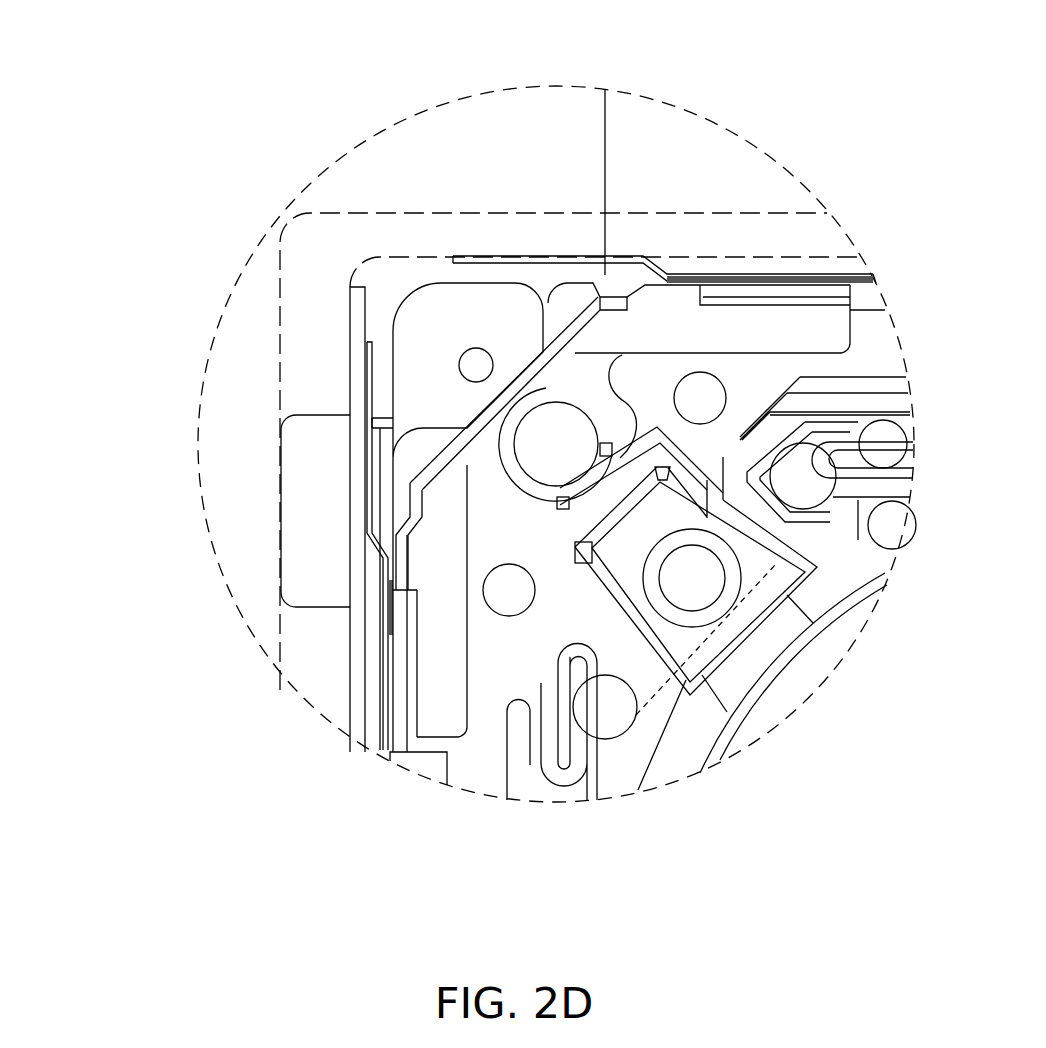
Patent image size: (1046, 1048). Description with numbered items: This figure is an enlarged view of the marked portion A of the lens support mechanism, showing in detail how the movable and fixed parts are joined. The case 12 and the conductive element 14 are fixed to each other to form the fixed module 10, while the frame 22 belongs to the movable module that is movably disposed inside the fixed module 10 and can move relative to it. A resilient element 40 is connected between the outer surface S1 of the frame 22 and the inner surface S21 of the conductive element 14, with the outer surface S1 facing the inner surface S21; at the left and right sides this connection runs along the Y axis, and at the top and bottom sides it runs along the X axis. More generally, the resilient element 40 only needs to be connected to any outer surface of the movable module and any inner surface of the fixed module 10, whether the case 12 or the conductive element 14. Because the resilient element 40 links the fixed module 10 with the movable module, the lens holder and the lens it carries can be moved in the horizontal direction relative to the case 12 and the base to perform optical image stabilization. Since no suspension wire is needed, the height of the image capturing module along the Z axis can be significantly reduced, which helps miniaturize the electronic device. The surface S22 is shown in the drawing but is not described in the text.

The fixed module 10 is at (112, 268).
The case 12 is at (345, 287).
The conductive element 14 is at (360, 318).
The frame 22 is at (792, 330).
The resilient element 40 is at (654, 278).
The outer surface S1 is at (688, 284).
The inner surface S21 is at (400, 680).
The third surface S22 is at (447, 312).
The marked portion A is at (551, 86).